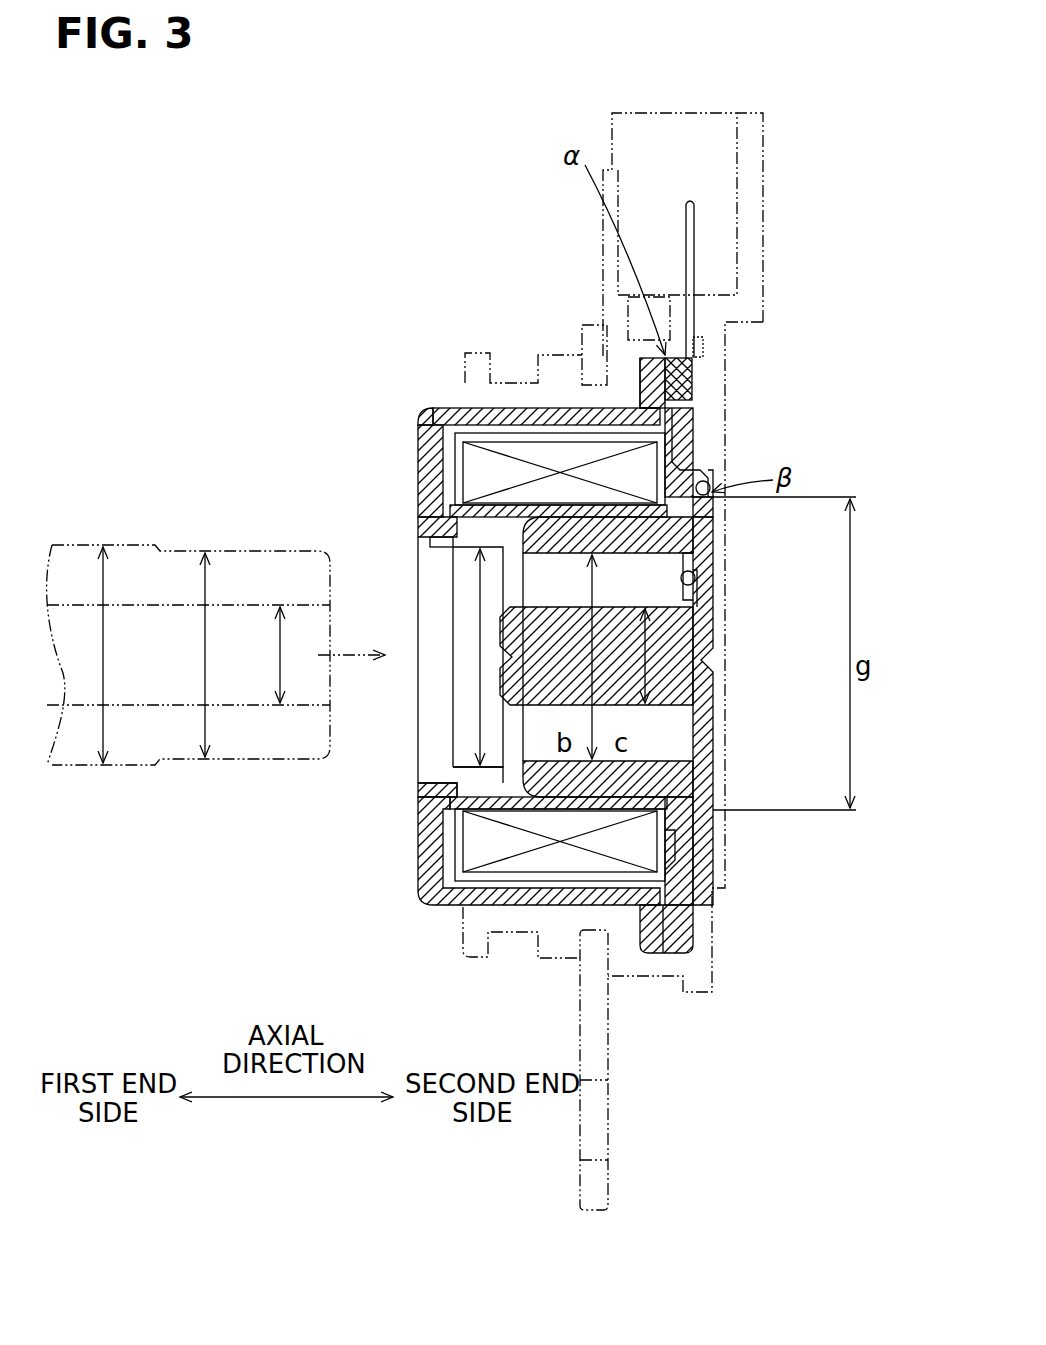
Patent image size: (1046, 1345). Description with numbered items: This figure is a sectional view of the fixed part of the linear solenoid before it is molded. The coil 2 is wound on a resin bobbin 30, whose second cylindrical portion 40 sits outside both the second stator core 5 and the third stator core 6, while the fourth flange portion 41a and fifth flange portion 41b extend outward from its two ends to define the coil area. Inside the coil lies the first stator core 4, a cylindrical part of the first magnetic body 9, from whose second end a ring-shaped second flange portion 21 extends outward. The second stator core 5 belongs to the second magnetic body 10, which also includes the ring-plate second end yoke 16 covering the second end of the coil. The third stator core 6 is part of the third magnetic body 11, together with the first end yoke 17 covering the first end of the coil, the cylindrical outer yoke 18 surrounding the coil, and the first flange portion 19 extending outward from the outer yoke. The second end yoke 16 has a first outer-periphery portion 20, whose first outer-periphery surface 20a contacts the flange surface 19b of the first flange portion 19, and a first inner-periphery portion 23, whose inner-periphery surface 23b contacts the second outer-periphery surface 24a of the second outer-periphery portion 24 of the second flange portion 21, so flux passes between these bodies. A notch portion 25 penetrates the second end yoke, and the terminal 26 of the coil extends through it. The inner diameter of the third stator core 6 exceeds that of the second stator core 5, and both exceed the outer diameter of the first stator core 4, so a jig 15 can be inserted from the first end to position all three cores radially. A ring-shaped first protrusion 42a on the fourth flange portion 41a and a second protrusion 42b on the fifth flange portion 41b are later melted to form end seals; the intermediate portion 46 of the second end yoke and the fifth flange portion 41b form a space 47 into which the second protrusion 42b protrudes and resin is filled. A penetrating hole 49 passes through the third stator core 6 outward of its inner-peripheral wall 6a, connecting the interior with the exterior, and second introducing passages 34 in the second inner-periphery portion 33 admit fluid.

The coil 2 is at (500, 470).
The first stator core 4 is at (605, 700).
The second stator core 5 is at (565, 845).
The third stator core 6 is at (468, 553).
The inner-peripheral wall 6a is at (445, 772).
The first magnetic body 9 is at (714, 667).
The second magnetic body 10 is at (696, 952).
The third magnetic body 11 is at (497, 405).
The jig 15 is at (240, 545).
The second end yoke 16 is at (712, 478).
The first end yoke 17 is at (430, 460).
The outer yoke 18 is at (540, 420).
The first flange portion 19 is at (653, 357).
The flange surface 19b is at (680, 385).
The first outer-periphery portion 20 is at (680, 370).
The first outer-periphery surface 20a is at (640, 395).
The second flange portion 21 is at (718, 574).
The first inner-periphery portion 23 is at (705, 470).
The inner-periphery surface 23b is at (712, 528).
The second outer-periphery portion 24 is at (705, 560).
The second outer-periphery surface 24a is at (712, 553).
The notch portion 25 is at (690, 432).
The terminal 26 is at (696, 230).
The bobbin 30 is at (455, 793).
The second inner-periphery portion 33 is at (705, 593).
The second introducing passages 34 is at (713, 577).
The second cylindrical portion 40 is at (480, 510).
The fourth flange portion 41a is at (456, 480).
The fifth flange portion 41b is at (648, 832).
The first protrusion 42a is at (430, 415).
The second protrusion 42b is at (662, 880).
The intermediate portion 46 is at (690, 845).
The space 47 is at (676, 852).
The penetrating hole 49 is at (462, 802).